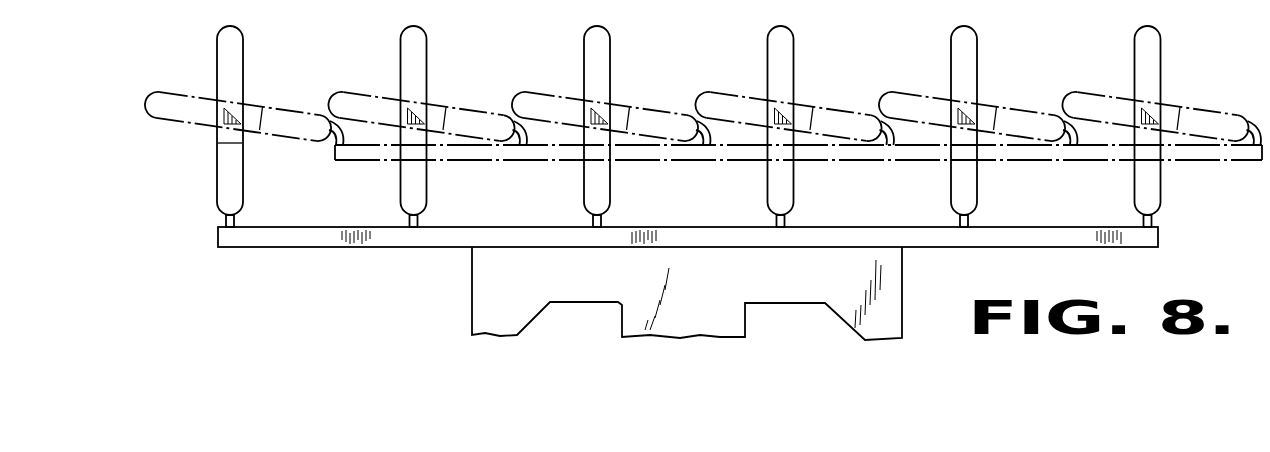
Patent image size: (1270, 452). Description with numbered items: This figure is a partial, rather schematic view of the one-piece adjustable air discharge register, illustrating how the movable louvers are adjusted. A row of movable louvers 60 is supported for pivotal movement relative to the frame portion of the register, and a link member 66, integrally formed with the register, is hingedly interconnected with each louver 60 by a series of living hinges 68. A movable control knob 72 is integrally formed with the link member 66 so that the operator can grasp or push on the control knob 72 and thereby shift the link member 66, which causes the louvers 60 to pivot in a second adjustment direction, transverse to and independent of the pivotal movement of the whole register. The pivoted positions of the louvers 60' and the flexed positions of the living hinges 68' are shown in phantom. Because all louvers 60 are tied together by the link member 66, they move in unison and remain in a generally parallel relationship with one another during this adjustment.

The movable louver 60 is at (698, 112).
The movable louver (moved position) 60' is at (697, 94).
The link member 66 is at (493, 160).
The living hinge 68 is at (689, 174).
The living hinge (moved position) 68' is at (1070, 129).
The control knob 72 is at (636, 322).